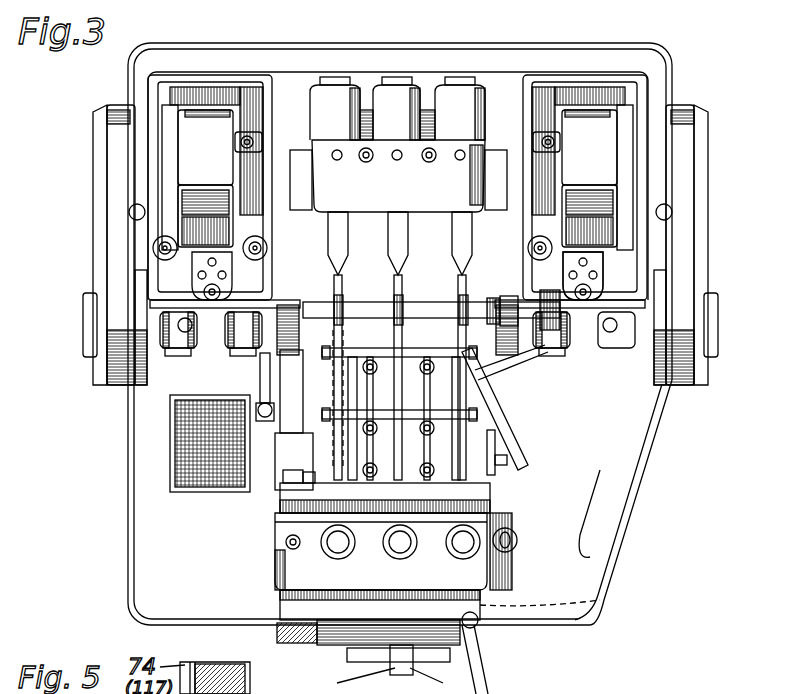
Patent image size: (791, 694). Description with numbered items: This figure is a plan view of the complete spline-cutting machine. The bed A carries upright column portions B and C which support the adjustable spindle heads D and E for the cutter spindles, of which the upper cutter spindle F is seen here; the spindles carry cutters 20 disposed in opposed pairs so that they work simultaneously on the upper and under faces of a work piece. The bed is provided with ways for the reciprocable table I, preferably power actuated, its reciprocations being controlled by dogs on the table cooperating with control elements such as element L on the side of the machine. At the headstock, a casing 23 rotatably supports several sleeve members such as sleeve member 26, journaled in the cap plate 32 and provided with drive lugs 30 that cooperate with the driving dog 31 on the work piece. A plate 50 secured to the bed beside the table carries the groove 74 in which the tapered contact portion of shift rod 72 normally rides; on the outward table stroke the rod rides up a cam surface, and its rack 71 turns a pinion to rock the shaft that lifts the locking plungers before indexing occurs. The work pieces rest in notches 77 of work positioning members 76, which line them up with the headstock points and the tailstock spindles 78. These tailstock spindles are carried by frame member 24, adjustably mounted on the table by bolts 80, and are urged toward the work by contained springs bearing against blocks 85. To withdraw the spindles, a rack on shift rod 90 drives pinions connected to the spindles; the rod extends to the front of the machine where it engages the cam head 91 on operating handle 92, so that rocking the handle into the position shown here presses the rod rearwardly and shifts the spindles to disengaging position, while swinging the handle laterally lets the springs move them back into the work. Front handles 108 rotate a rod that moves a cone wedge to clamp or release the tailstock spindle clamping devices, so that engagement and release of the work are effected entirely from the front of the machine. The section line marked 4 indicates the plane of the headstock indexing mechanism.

The blocks 85 is at (460, 78).
The frame member 24 is at (322, 158).
The tailstock spindles 78 is at (343, 232).
The bolts 80 is at (425, 235).
The notches 77 is at (480, 366).
The work positioning members 76 is at (478, 392).
The shift rod 90 is at (478, 398).
The cutter spindle F is at (490, 344).
The reciprocable table I is at (500, 452).
The control element L is at (490, 464).
The rack 71 is at (304, 398).
The cutters 20 is at (260, 368).
The groove 74 is at (260, 390).
The bed A is at (155, 412).
The upright column portion C is at (160, 262).
The adjustable spindle head E is at (160, 305).
The upright column portion B is at (640, 265).
The adjustable spindle head D is at (616, 325).
The shift rod 72 is at (277, 552).
The plate 50 is at (290, 487).
The driving dog 31 is at (310, 487).
The drive lugs 30 is at (313, 484).
The cap plate 32 is at (277, 589).
The handles 108 is at (362, 690).
The operating handle 92 is at (506, 653).
The cam head 91 is at (541, 625).
The sleeve member 26 is at (534, 689).
The casing 23 is at (540, 574).
The section line 4- 4 is at (105, 512).